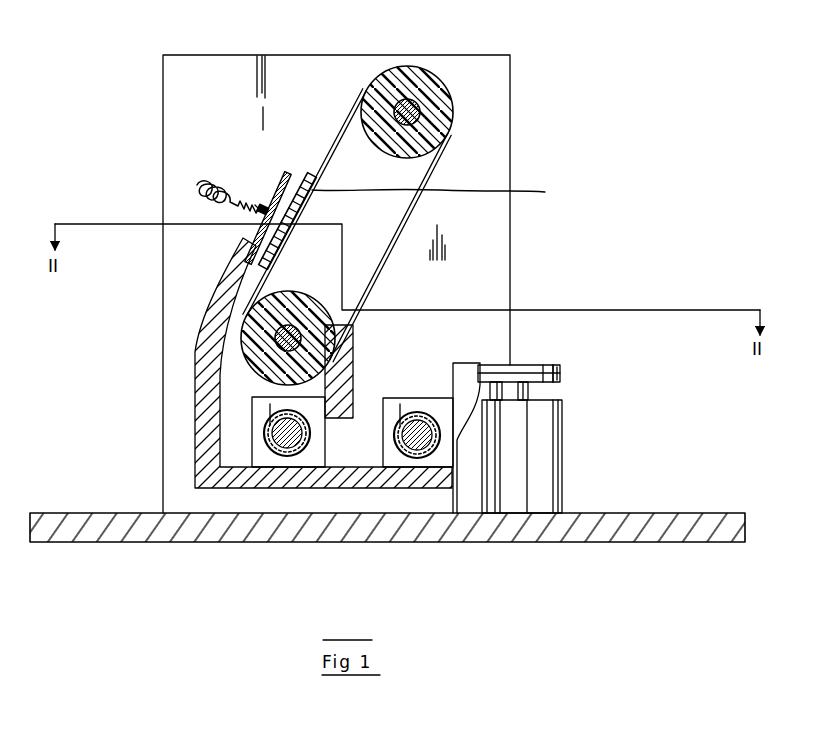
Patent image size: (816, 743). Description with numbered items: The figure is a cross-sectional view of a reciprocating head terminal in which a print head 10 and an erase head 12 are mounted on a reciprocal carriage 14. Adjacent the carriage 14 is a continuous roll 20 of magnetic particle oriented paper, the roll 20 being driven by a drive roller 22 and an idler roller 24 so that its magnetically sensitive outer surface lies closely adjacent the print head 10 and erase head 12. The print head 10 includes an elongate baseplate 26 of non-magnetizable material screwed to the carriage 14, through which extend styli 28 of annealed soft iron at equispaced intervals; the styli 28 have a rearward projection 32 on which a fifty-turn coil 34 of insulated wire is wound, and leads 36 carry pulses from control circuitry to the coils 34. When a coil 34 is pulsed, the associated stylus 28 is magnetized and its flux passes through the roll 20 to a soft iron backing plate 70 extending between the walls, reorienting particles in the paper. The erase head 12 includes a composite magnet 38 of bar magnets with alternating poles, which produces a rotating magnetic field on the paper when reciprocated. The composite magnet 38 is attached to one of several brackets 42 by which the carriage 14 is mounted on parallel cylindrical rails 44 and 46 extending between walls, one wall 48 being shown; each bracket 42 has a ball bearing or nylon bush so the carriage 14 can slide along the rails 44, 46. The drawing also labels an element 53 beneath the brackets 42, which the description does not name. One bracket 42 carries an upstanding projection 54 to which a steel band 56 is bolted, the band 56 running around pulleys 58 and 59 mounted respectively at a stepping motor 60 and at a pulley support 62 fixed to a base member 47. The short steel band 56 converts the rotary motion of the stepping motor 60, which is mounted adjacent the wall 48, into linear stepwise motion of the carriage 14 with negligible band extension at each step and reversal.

The print head 10 is at (150, 103).
The erase head 12 is at (356, 362).
The reciprocal carriage 14 is at (280, 363).
The continuous roll of magnetic particle oriented paper 20 is at (433, 168).
The drive roller 22 is at (250, 370).
The idler roller 24 is at (437, 70).
The elongate baseplate 26 is at (303, 180).
The styli 28 is at (282, 173).
The projection 32 is at (263, 208).
The coil 34 is at (248, 203).
The leads 36 is at (195, 181).
The composite magnet 38 is at (353, 330).
The brackets 42 is at (313, 448).
The cylindrical rail 44 is at (420, 455).
The cylindrical rail 46 is at (298, 458).
The base member 47 is at (650, 513).
The wall 48 is at (487, 215).
The shaft 53 is at (275, 453).
The upstanding projection 54 is at (472, 362).
The steel band 56 is at (552, 378).
The pulley 58 is at (552, 365).
The pulley 59 is at (490, 362).
The stepping motor 60 is at (543, 437).
The pulley support 62 is at (500, 475).
The soft iron backing plate 70 is at (441, 194).